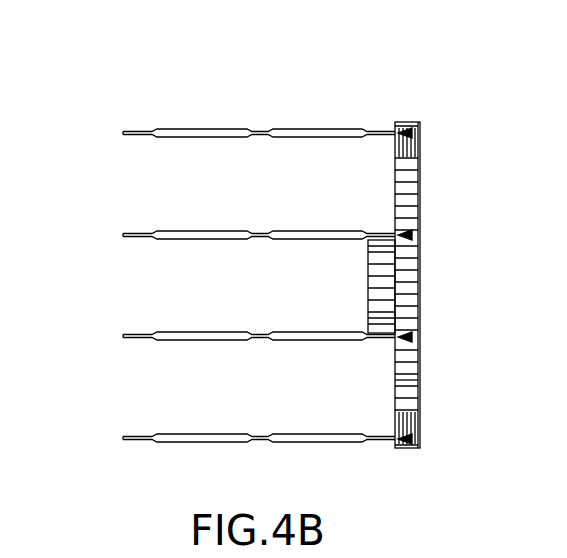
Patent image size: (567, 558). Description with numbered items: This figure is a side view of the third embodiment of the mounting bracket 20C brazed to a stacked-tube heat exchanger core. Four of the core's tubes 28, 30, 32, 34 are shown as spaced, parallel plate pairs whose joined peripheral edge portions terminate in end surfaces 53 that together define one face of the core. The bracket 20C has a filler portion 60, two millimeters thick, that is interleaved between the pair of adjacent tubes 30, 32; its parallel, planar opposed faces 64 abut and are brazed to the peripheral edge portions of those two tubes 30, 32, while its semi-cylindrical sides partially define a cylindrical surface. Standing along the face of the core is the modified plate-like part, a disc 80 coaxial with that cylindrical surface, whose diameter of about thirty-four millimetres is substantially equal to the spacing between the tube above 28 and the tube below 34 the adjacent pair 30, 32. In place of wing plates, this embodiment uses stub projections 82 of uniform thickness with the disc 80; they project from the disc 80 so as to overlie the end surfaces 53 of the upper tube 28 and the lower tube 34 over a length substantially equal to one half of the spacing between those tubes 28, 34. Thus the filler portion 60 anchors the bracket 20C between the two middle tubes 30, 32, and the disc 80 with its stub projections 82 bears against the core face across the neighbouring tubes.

The mounting bracket 20C is at (403, 108).
The tube 28 is at (126, 120).
The tube 30 is at (126, 222).
The tube 32 is at (126, 323).
The tube 34 is at (126, 425).
The end surfaces 53 is at (412, 133).
The filler portion 60 is at (378, 313).
The opposed faces 64 is at (392, 245).
The disc 80 is at (400, 380).
The stub projections 82 is at (410, 150).